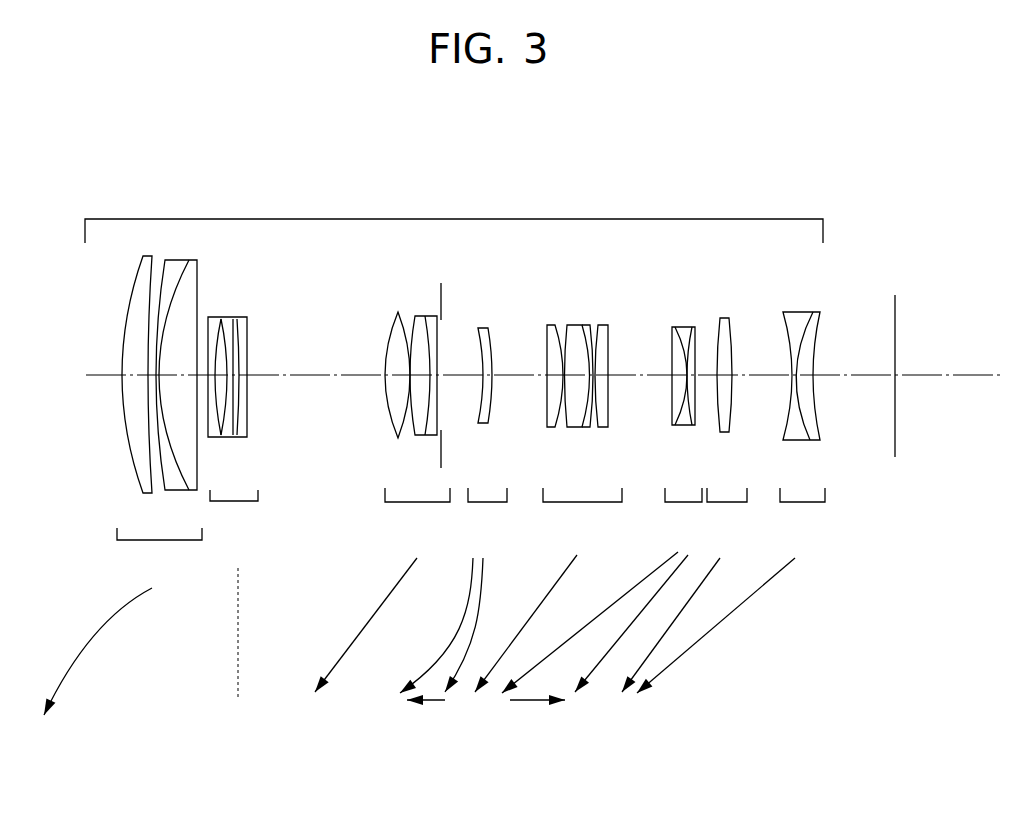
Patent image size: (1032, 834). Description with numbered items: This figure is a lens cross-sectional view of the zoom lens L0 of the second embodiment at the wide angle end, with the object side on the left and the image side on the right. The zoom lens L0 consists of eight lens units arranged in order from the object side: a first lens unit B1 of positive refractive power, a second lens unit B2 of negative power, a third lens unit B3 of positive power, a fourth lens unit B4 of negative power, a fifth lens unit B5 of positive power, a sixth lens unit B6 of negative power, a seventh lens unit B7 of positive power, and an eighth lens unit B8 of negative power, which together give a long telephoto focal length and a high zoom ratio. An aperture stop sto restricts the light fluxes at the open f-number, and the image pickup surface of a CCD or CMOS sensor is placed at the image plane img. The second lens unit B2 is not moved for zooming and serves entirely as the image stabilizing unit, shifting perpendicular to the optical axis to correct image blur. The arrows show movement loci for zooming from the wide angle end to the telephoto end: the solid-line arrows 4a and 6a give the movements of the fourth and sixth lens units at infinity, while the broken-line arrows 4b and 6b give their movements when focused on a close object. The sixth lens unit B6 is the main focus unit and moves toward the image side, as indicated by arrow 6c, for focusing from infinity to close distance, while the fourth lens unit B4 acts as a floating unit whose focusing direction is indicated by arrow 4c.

The zoom lens L0 is at (454, 218).
The first lens unit B1 is at (123, 485).
The second lens unit B2 is at (236, 507).
The third lens unit B3 is at (382, 502).
The fourth lens unit B4 is at (492, 432).
The fifth lens unit B5 is at (548, 508).
The sixth lens unit B6 is at (638, 509).
The seventh lens unit B7 is at (695, 505).
The eighth lens unit B8 is at (732, 502).
The aperture stop sto is at (441, 298).
The image plane img is at (894, 327).
The solid-line arrow 4a is at (483, 602).
The broken-line arrow 4b is at (440, 655).
The focusing arrow 4c is at (427, 700).
The solid-line arrow 6a is at (603, 617).
The broken-line arrow 6b is at (603, 667).
The focusing arrow 6c is at (537, 700).